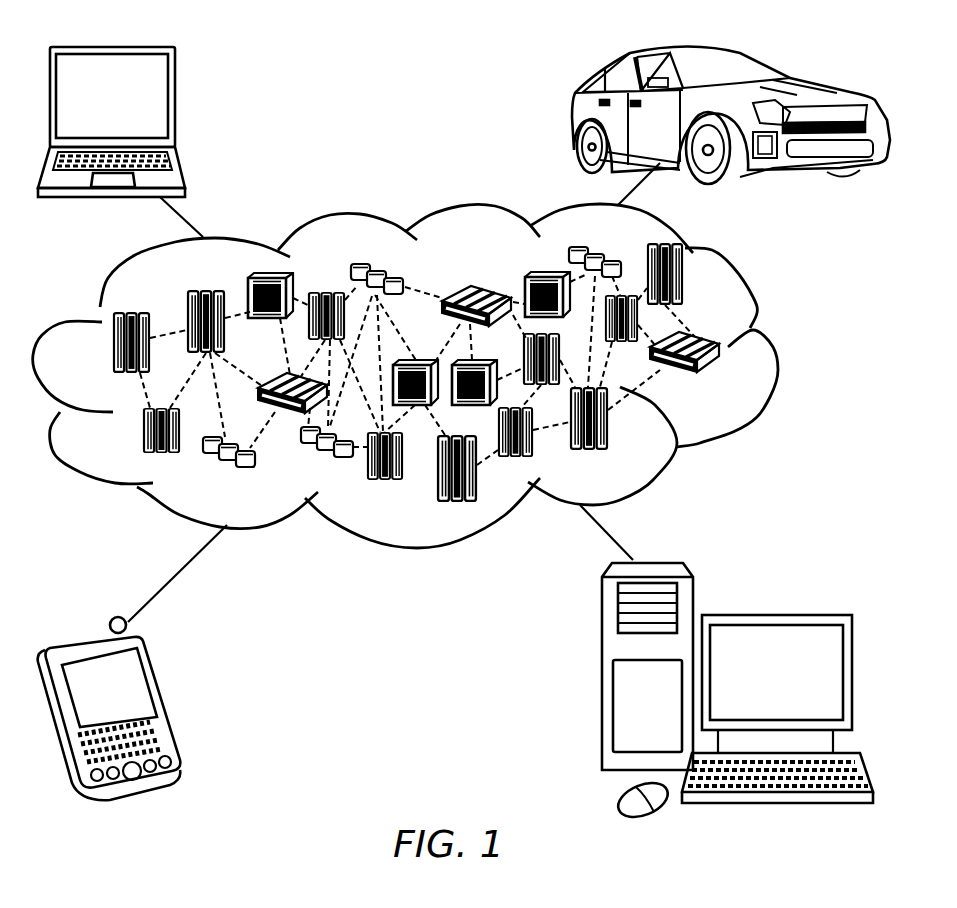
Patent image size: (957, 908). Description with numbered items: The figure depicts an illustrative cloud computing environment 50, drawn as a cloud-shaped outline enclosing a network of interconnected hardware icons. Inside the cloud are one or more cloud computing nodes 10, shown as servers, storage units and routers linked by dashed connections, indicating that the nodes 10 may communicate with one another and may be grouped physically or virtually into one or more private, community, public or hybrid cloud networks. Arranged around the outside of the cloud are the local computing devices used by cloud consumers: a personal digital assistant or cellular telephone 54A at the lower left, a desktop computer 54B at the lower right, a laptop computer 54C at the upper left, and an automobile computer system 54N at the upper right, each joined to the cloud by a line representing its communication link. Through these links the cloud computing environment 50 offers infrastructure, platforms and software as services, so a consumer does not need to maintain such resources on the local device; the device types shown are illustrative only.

The cloud computing nodes 10 is at (719, 378).
The cloud computing environment 50 is at (773, 353).
The personal digital assistant (PDA) or cellular telephone 54A is at (170, 700).
The desktop computer 54B is at (772, 615).
The laptop computer 54C is at (175, 105).
The automobile computer system 54N is at (576, 118).